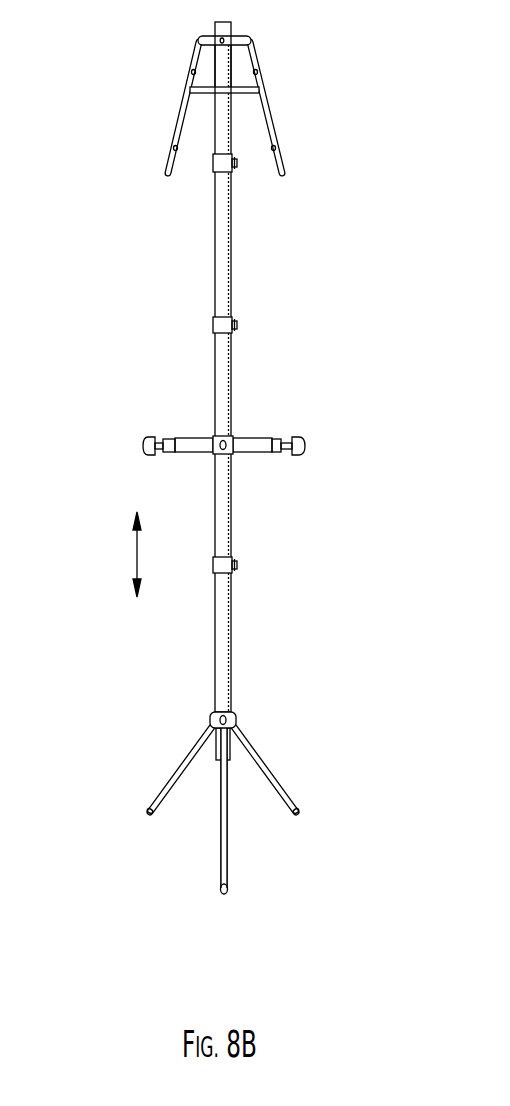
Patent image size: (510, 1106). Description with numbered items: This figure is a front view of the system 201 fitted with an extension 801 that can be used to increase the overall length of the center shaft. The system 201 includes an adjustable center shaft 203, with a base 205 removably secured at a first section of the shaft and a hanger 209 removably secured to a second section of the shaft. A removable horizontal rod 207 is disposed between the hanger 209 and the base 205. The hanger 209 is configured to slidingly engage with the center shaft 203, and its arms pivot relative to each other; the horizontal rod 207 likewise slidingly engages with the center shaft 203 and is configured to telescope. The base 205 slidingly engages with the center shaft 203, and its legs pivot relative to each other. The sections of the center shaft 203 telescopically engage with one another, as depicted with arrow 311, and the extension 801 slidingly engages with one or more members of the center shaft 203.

The system 201 is at (226, 109).
The hanger 209 is at (122, 185).
The extension 801 is at (230, 280).
The horizontal rod 207 is at (95, 367).
The adjustable center shaft 203 is at (345, 475).
The arrow 311 is at (133, 555).
The base 205 is at (117, 745).